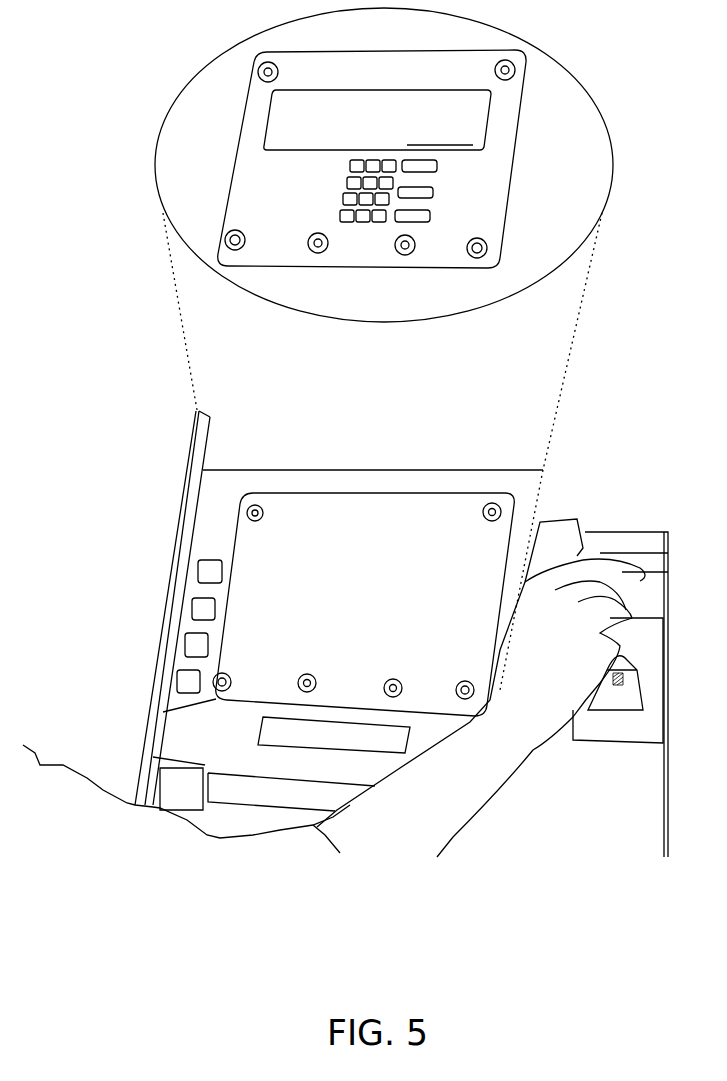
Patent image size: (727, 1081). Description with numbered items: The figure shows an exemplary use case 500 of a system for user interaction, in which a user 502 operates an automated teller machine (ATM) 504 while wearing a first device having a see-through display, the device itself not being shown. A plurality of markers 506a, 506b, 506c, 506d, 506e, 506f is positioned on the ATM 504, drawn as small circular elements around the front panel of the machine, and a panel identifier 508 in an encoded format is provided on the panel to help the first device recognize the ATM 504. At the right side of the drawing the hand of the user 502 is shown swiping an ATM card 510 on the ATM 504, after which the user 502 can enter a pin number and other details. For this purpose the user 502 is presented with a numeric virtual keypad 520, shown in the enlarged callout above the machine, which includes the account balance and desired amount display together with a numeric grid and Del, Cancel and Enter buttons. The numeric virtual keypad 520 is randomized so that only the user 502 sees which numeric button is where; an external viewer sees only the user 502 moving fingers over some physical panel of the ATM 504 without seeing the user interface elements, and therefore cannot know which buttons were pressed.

The use case 500 is at (83, 51).
The user 502 is at (440, 793).
The automated teller machine (ATM) 504 is at (180, 557).
The marker 506a is at (252, 510).
The marker 506b is at (218, 680).
The marker 506c is at (304, 684).
The marker 506d is at (394, 686).
The marker 506e is at (466, 692).
The marker 506f is at (493, 510).
The panel identifier 508 is at (315, 506).
The ATM card 510 is at (642, 562).
The numeric virtual keypad 520 is at (578, 169).